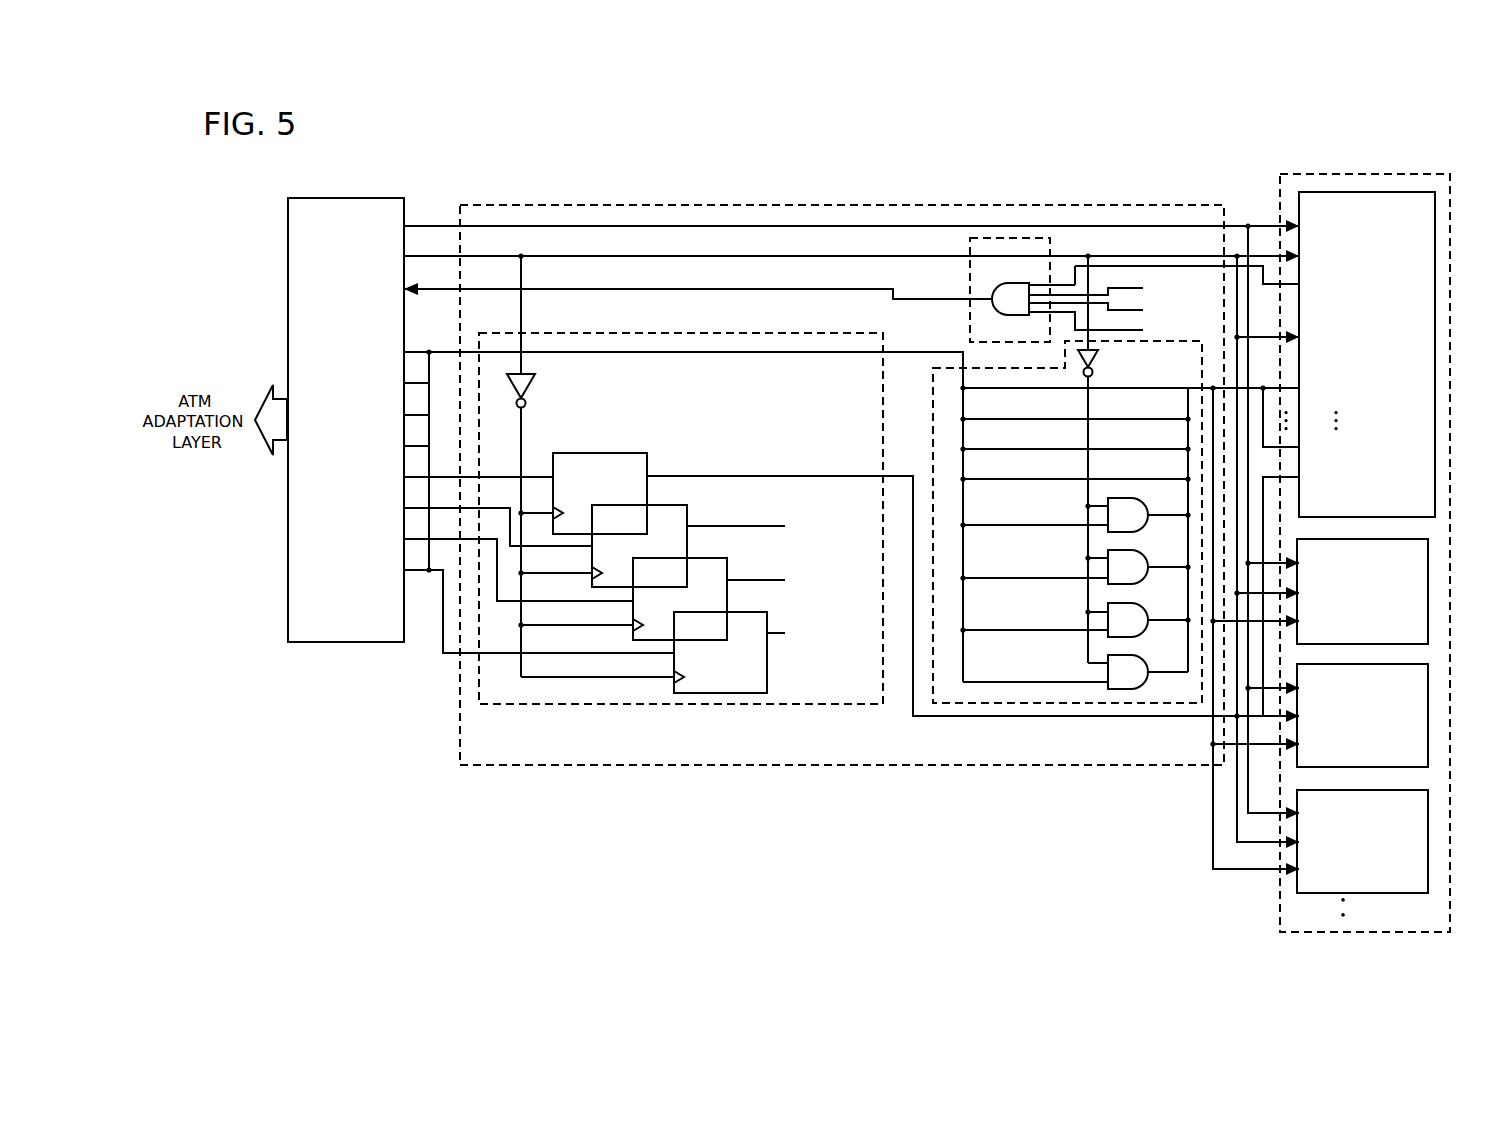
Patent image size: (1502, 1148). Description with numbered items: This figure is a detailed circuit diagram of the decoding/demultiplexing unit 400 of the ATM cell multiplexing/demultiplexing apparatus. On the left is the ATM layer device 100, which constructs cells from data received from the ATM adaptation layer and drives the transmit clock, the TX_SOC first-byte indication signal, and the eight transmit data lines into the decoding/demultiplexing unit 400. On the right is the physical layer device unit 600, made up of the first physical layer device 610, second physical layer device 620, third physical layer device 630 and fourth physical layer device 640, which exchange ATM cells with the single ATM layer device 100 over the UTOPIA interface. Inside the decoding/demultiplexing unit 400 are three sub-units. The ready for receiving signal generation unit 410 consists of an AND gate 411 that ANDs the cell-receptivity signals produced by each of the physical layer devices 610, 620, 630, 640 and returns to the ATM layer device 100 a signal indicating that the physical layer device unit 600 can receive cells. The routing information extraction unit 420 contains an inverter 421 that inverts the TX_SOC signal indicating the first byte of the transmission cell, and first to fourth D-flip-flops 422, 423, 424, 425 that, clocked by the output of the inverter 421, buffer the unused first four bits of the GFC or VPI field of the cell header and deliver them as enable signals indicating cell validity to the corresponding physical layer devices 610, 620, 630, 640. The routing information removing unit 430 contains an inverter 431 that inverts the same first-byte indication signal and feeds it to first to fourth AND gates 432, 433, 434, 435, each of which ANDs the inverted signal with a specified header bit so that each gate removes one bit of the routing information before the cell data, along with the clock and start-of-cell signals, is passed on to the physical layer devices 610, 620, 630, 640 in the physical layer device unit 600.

The ATM layer device 100 is at (377, 198).
The decoding/demultiplexing unit 400 is at (912, 205).
The ready for receiving signal generation unit 410 is at (970, 332).
The AND gate 411 is at (992, 287).
The routing information extraction unit 420 is at (683, 704).
The inverter 421 is at (535, 385).
The first D-flip-flop 422 is at (590, 453).
The second D-flip-flop 423 is at (698, 518).
The third D-flip-flop 424 is at (740, 571).
The fourth D-flip-flop 425 is at (767, 677).
The routing information removing unit 430 is at (1068, 703).
The inverter 431 is at (1098, 360).
The first AND gate 432 is at (1125, 498).
The second AND gate 433 is at (1125, 550).
The third AND gate 434 is at (1125, 603).
The fourth AND gate 435 is at (1125, 655).
The physical layer device unit 600 is at (1280, 200).
The first physical layer device 610 is at (1380, 192).
The second physical layer device 620 is at (1428, 563).
The third physical layer device 630 is at (1428, 688).
The fourth physical layer device 640 is at (1428, 813).